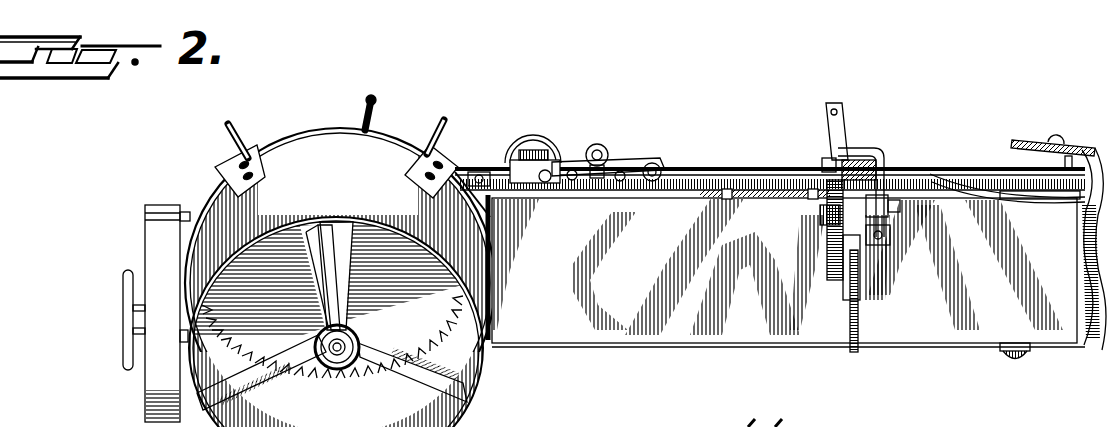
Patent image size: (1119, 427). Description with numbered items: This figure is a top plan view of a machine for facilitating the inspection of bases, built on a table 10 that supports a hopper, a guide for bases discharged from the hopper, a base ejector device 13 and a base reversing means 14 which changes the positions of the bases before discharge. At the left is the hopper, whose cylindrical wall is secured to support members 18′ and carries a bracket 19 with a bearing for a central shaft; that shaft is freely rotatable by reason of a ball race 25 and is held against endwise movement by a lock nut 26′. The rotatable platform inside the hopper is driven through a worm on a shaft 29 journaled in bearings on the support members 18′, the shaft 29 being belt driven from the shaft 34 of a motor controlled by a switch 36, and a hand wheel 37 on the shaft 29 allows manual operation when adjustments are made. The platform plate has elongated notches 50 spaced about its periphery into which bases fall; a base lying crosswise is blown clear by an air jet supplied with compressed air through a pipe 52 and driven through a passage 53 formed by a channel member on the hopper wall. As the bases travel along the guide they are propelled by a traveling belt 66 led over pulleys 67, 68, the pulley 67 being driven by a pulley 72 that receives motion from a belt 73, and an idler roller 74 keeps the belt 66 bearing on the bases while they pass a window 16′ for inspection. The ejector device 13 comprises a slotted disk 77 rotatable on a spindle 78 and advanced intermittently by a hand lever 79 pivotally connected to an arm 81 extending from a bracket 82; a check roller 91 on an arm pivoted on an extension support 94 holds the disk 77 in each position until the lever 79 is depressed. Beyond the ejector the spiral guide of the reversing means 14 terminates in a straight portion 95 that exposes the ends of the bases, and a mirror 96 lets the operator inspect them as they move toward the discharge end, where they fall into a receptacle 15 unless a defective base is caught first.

The table 10 is at (787, 272).
The base ejector device 13 is at (880, 137).
The base reversing means 14 is at (962, 178).
The receptacle 15 is at (1090, 320).
The window 16′ is at (750, 190).
The support members 18′ is at (242, 132).
The bracket 19 is at (330, 332).
The ball race 25 is at (261, 372).
The lock nut 26′ is at (338, 356).
The shaft 29 is at (180, 338).
The shaft 34 is at (180, 242).
The switch 36 is at (1022, 352).
The hand wheel 37 is at (128, 320).
The elongated notches 50 is at (460, 300).
The pipe 52 is at (364, 108).
The passage 53 is at (318, 322).
The traveling belt 66 is at (632, 160).
The pulley 67 is at (565, 160).
The pulley 68 is at (662, 172).
The pulley 72 is at (528, 148).
The belt 73 is at (505, 176).
The idler roller 74 is at (602, 147).
The disk 77 is at (832, 266).
The spindle 78 is at (820, 212).
The hand lever 79 is at (859, 325).
The arm 81 is at (885, 182).
The bracket 82 is at (886, 242).
The check roller 91 is at (824, 162).
The extension support 94 is at (846, 120).
The straight portion 95 is at (1036, 200).
The mirror 96 is at (1048, 140).